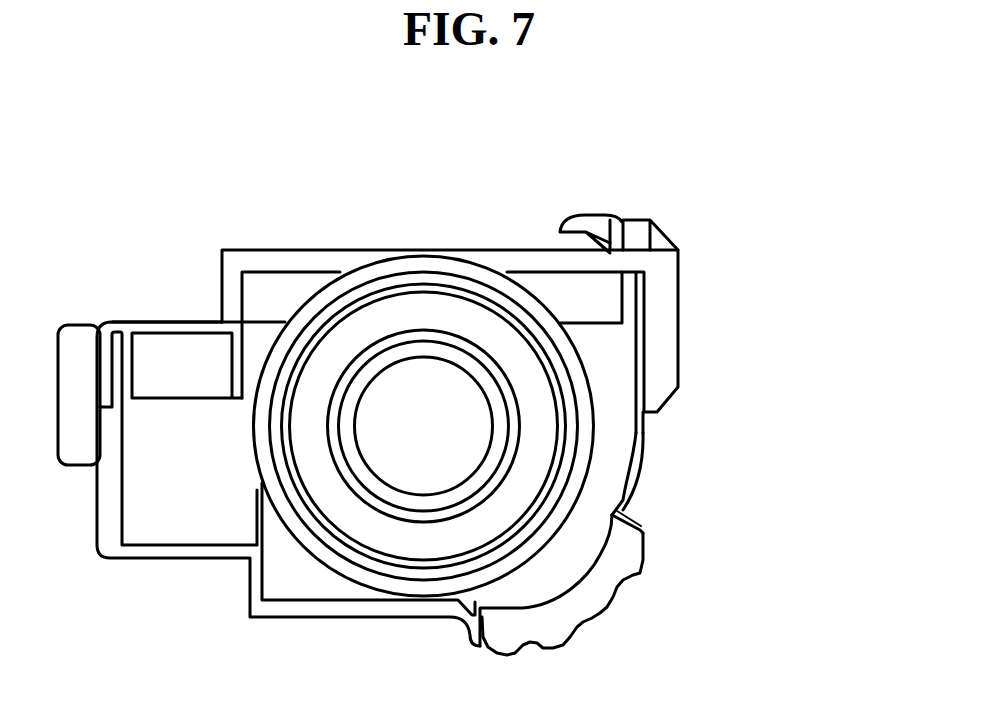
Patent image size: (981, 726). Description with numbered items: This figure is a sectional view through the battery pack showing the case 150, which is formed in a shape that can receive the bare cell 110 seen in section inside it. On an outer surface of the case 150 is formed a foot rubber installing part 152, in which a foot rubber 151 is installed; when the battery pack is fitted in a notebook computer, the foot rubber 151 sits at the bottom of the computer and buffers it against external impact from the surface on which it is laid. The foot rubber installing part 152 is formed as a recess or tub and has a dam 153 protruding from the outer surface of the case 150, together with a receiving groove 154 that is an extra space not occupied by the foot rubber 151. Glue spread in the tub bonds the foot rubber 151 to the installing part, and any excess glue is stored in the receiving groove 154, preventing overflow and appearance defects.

The case 150 is at (233, 226).
The bare cell 110 is at (418, 310).
The foot rubber 151 is at (595, 602).
The foot rubber installing part 152 is at (757, 509).
The dam 153 is at (640, 527).
The receiving groove 154 is at (620, 517).